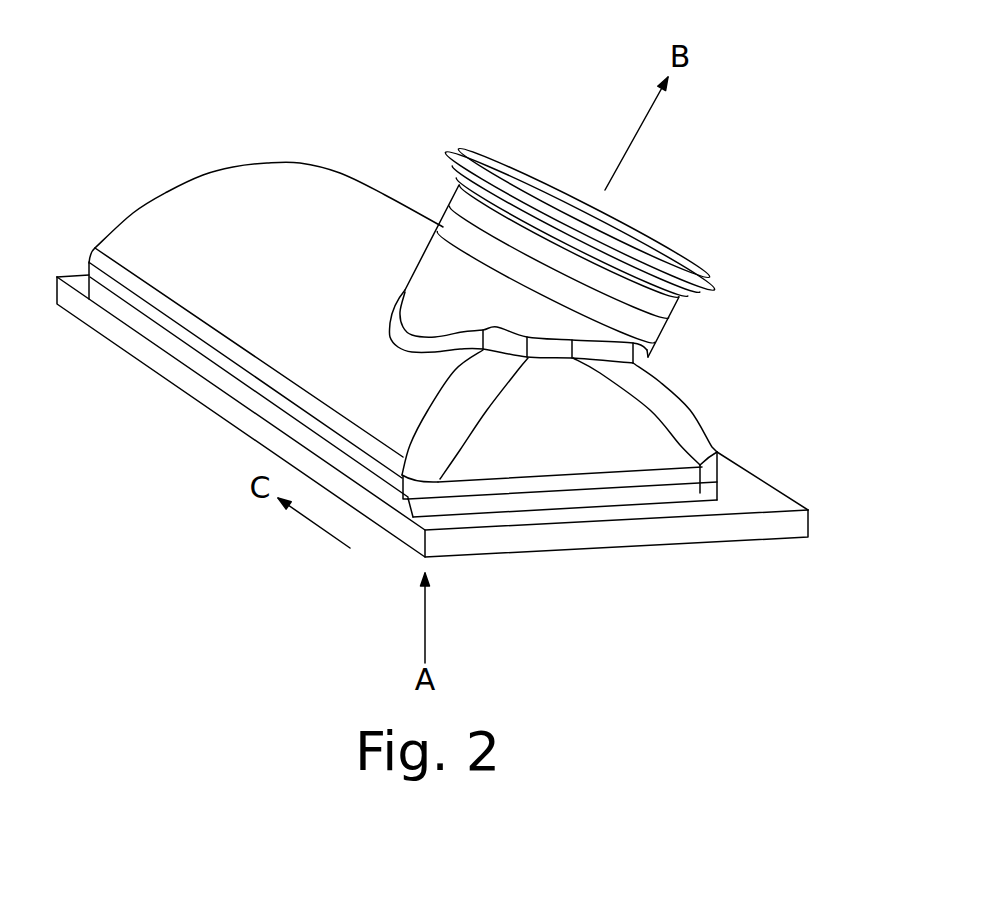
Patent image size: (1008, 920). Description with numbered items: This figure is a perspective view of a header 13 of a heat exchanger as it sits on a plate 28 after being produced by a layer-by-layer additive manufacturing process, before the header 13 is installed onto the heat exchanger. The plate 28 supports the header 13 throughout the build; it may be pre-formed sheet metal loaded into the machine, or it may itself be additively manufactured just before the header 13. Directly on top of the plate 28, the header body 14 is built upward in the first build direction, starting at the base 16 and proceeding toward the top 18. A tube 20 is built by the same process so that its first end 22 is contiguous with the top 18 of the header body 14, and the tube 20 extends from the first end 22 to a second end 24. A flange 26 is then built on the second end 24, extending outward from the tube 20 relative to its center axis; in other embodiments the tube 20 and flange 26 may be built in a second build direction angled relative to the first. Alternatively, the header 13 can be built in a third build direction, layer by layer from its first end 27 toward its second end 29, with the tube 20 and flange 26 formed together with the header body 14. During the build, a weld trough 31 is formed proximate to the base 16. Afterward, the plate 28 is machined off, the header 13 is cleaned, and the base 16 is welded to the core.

The header 13 is at (263, 222).
The header body 14 is at (205, 173).
The base 16 is at (82, 293).
The top 18 is at (355, 228).
The tube 20 is at (648, 331).
The first end 22 is at (643, 365).
The second end 24 is at (685, 300).
The flange 26 is at (448, 157).
The first end 27 is at (585, 443).
The plate 28 is at (783, 533).
The second end 29 is at (152, 183).
The weld trough 31 is at (698, 492).